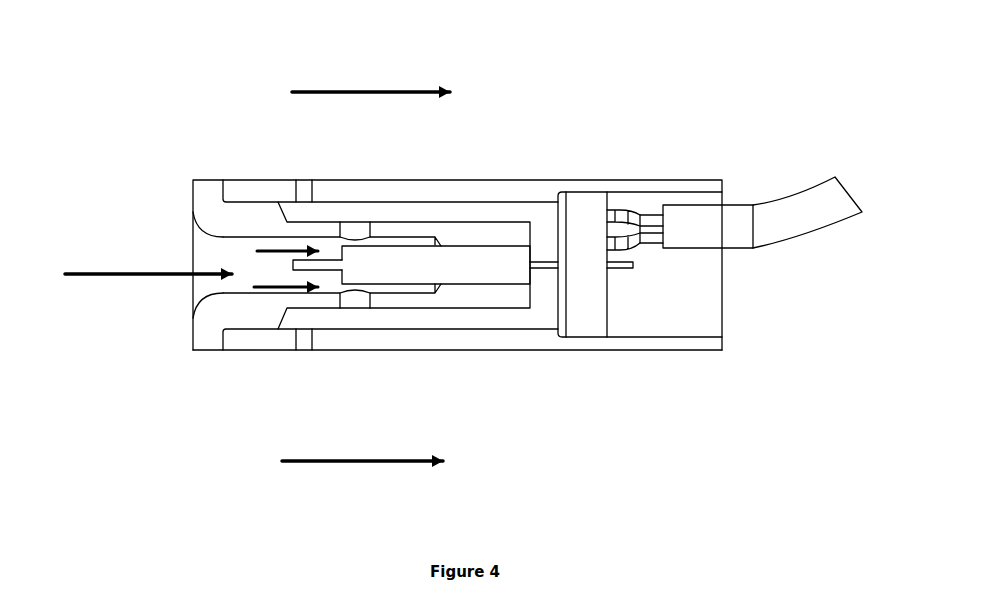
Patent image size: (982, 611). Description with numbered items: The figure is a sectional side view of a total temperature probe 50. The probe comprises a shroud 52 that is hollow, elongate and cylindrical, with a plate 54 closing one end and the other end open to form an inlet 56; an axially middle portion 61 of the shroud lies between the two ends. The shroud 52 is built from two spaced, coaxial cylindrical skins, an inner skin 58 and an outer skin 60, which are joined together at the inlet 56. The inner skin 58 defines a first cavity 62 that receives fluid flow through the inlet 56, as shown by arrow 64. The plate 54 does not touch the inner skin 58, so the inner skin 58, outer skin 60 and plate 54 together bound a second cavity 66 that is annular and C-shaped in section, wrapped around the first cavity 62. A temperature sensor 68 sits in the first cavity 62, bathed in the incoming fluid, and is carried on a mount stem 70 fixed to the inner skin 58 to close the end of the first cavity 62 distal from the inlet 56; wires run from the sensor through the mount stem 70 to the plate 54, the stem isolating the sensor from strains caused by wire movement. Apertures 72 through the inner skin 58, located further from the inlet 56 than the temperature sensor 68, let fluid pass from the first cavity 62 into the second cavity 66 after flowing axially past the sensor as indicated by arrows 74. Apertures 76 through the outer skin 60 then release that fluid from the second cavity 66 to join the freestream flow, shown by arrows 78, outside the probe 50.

The total temperature probe 50 is at (223, 122).
The shroud 52 is at (192, 180).
The plate 54 is at (600, 200).
The inlet 56 is at (190, 291).
The inner skin 58 is at (322, 240).
The outer skin 60 is at (437, 188).
The axially middle portion 61 is at (395, 357).
The first cavity 62 is at (245, 277).
The arrow (fluid flow through inlet) 64 is at (150, 274).
The second cavity 66 is at (542, 218).
The temperature sensor 68 is at (321, 274).
The mount stem 70 is at (403, 278).
The aperture (in inner skin) 72 is at (357, 229).
The arrows (axial flow past sensor) 74 is at (265, 288).
The aperture (in outer skin) 76 is at (304, 184).
The arrows (freestream flow) 78 is at (368, 90).